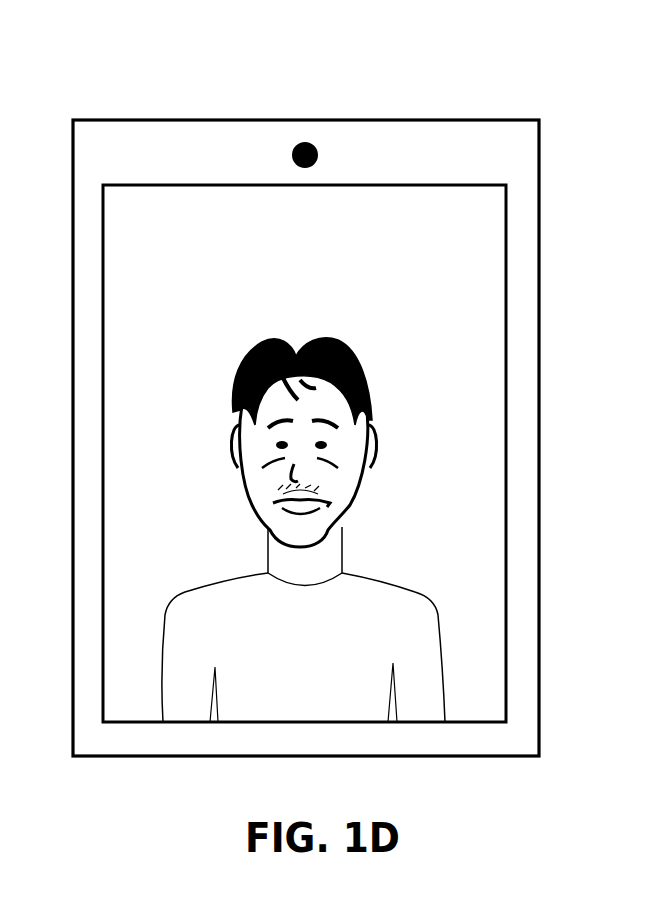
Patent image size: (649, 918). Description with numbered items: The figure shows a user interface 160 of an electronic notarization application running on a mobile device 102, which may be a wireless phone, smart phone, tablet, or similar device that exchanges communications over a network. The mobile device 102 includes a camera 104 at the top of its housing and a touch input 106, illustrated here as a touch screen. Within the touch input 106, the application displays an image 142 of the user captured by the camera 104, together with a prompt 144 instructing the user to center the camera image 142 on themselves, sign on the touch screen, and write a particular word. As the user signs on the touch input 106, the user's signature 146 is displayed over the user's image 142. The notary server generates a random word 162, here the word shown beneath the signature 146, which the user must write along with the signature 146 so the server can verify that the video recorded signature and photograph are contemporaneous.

The mobile device 102 is at (447, 120).
The camera 104 is at (304, 143).
The touch input 106 is at (508, 445).
The image 142 is at (210, 414).
The prompt 144 is at (480, 248).
The signature 146 is at (378, 605).
The user interface 160 is at (570, 92).
The random word 162 is at (392, 295).